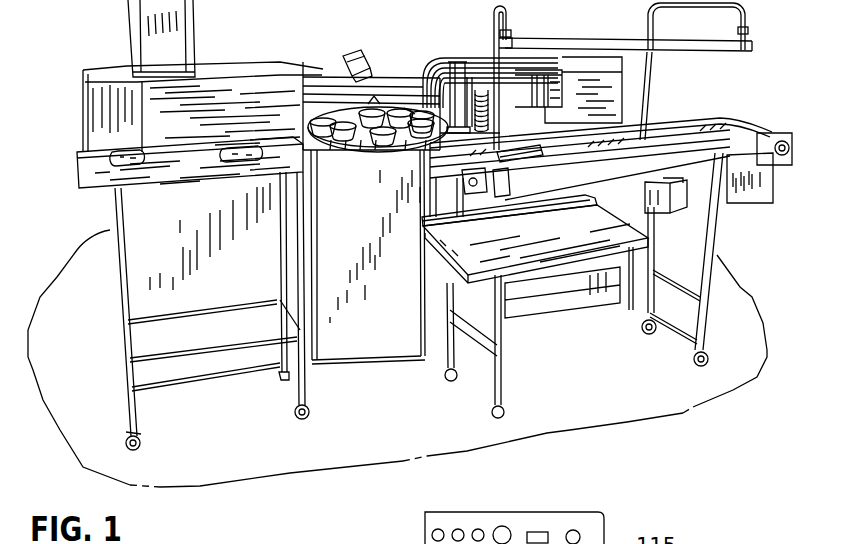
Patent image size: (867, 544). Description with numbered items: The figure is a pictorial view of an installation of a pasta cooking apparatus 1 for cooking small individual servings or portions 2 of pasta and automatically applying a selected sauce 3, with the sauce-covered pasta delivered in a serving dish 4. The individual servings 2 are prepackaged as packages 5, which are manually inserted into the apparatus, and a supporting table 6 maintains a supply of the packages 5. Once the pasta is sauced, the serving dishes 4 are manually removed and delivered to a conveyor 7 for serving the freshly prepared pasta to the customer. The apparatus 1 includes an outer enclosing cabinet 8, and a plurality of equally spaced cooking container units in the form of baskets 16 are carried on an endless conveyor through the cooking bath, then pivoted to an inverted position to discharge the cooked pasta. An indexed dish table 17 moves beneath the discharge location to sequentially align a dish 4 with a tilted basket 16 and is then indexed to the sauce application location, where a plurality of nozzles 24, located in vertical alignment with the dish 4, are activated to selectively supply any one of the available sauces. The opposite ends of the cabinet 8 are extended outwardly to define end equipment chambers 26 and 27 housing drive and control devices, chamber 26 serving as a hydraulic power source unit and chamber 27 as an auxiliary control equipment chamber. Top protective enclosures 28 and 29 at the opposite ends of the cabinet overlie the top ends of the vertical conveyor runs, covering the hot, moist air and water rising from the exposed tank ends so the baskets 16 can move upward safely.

The pasta cooking apparatus 1 is at (385, 38).
The servings or portions of pasta 2 is at (129, 147).
The sauce 3 is at (427, 111).
The serving dish 4 is at (388, 139).
The package 5 is at (233, 173).
The supporting table 6 is at (172, 189).
The conveyor 7 is at (635, 143).
The outer enclosing cabinet 8 is at (367, 337).
The cooking container units (baskets) 16 is at (352, 49).
The indexed dish table 17 is at (371, 218).
The nozzles 24 is at (433, 57).
The end equipment chamber 26 is at (182, 367).
The end equipment chamber 27 is at (546, 297).
The top protective enclosure 28 is at (266, 84).
The top protective enclosure 29 is at (610, 97).